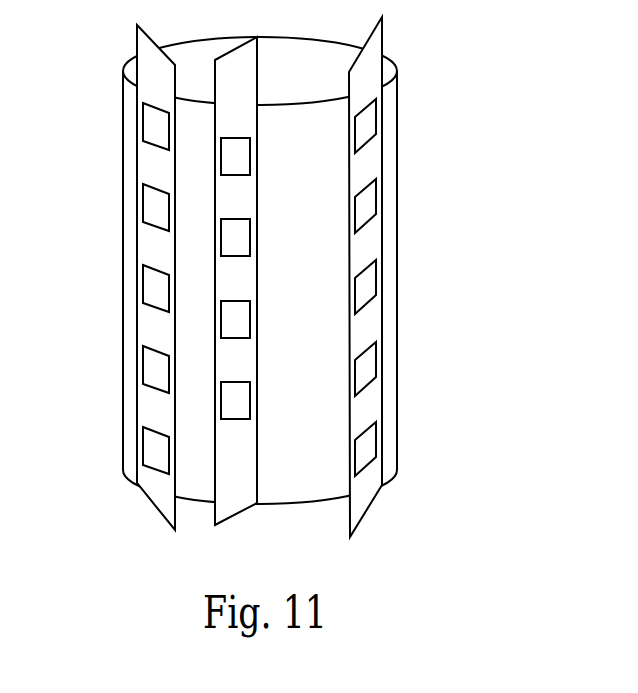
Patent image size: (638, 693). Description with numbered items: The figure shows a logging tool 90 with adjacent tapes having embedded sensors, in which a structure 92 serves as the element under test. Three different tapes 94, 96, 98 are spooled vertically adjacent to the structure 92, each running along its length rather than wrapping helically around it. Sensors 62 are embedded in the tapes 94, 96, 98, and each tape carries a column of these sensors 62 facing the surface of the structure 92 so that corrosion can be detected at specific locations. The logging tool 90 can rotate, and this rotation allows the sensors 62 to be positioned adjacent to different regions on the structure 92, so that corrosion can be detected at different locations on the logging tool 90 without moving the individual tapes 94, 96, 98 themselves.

The logging tool 90 is at (528, 70).
The structure 92 is at (122, 165).
The tape 94 is at (143, 503).
The tape 96 is at (240, 512).
The tape 98 is at (383, 402).
The sensors 62 is at (250, 235).